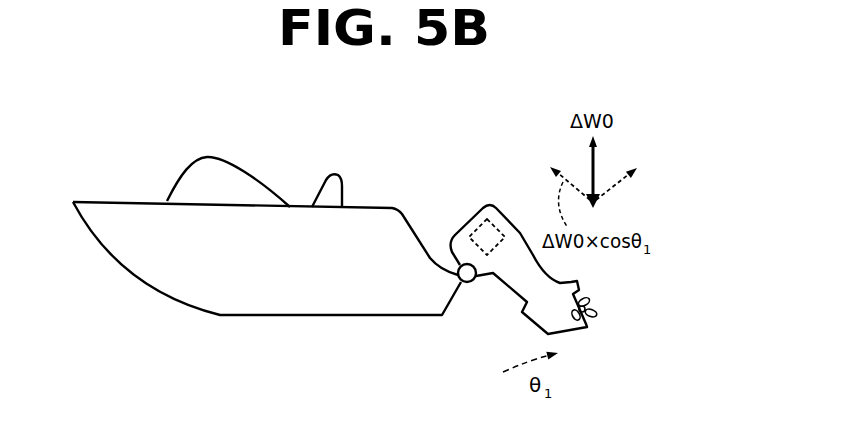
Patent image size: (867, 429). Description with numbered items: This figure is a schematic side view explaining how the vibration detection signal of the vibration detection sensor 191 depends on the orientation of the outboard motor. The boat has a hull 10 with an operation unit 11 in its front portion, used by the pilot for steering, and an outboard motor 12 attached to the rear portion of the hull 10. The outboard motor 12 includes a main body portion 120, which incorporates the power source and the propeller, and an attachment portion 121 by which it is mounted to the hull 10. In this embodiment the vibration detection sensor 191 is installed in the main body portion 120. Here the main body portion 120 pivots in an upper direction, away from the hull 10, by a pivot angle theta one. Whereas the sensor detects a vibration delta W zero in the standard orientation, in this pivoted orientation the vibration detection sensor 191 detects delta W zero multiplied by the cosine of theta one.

The hull 10 is at (106, 200).
The operation unit 11 is at (231, 183).
The outboard motor 12 is at (503, 206).
The main body portion 120 is at (503, 231).
The attachment portion 121 is at (470, 283).
The vibration detection sensor 191 is at (473, 218).